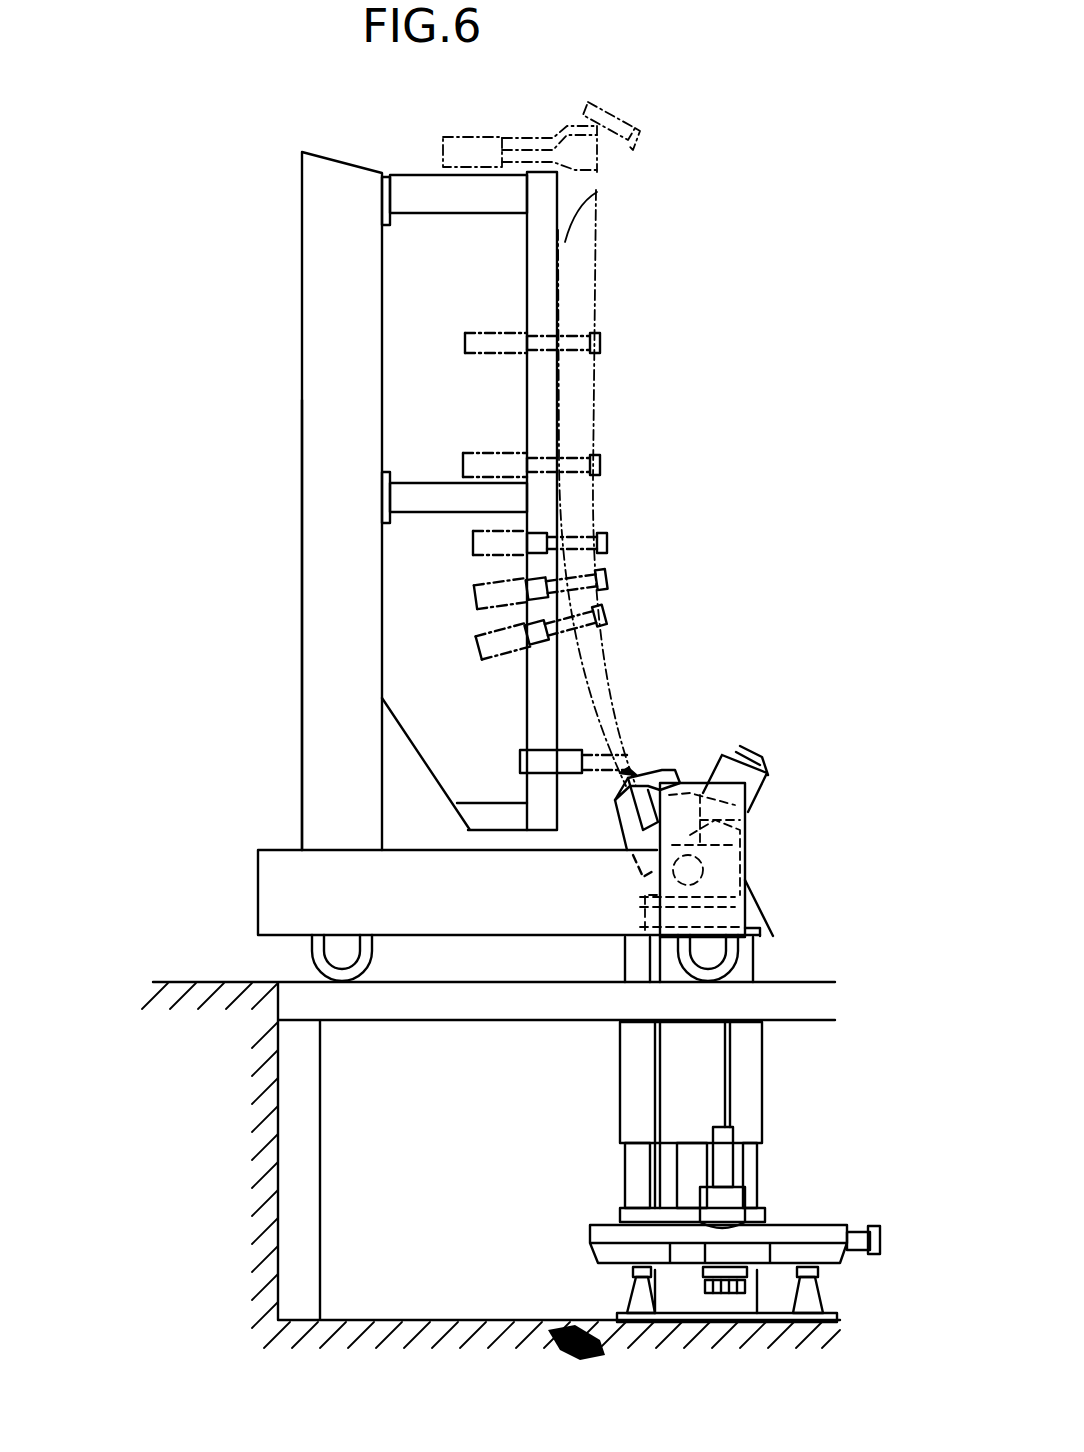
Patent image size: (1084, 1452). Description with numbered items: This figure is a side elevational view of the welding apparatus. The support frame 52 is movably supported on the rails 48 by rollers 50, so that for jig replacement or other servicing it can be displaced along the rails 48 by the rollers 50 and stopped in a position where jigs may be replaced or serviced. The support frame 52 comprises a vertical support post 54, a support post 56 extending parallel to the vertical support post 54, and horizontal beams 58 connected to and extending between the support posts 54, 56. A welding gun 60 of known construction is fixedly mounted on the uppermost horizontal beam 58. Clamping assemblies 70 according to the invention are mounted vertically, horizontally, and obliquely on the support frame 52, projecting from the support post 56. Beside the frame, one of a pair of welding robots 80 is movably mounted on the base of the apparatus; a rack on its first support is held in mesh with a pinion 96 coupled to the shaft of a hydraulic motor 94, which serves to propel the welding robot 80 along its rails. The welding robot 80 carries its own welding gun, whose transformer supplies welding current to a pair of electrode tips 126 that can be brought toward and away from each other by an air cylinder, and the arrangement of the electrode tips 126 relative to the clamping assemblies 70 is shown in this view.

The rails 48 is at (527, 1005).
The rollers 50 is at (360, 966).
The support frame 52 is at (298, 505).
The vertical support post 54 is at (318, 595).
The support post 56 is at (545, 277).
The horizontal beams 58 is at (422, 192).
The welding gun 60 is at (551, 128).
The clamping assemblies 70 is at (480, 362).
The welding robot 80 is at (610, 1062).
The hydraulic motor 94 is at (735, 1197).
The pinion 96 is at (700, 1285).
The electrode tips 126 is at (635, 773).